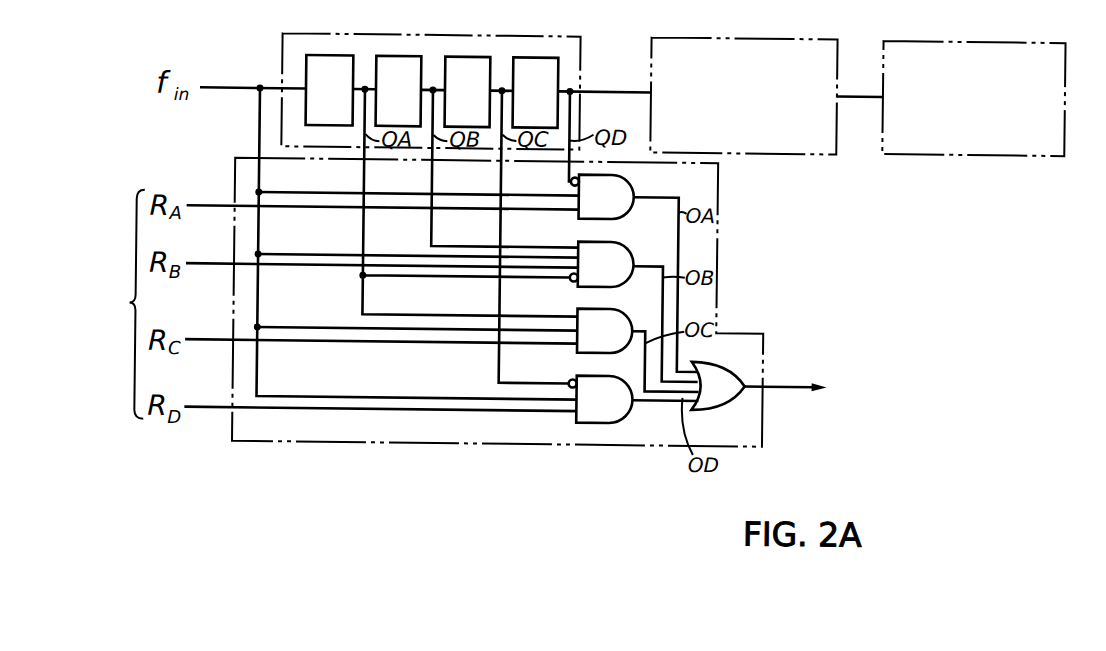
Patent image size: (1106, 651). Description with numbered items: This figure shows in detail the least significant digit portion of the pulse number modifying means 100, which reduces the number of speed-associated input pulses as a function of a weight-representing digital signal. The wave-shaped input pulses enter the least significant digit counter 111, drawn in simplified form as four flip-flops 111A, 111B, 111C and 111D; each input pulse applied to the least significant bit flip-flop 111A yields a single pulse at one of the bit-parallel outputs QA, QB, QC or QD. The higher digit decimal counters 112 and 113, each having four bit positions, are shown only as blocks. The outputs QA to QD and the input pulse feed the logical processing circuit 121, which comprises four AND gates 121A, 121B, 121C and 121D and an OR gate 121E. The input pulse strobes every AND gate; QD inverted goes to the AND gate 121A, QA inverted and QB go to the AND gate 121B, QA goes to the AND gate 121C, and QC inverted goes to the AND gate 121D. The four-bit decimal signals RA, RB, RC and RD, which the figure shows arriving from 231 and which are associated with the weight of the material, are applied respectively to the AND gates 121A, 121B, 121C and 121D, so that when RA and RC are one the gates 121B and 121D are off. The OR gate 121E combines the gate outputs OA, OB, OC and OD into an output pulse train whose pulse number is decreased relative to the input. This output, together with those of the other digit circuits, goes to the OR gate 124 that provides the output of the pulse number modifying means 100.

The pulse number modifying means 100 is at (258, 512).
The least significant digit decimal counter 111 is at (580, 33).
The least significant bit flip-flop 111A is at (323, 43).
The second stage flip-flop 111B is at (393, 43).
The third stage flip-flop 111C is at (461, 42).
The fourth stage flip-flop 111D is at (525, 42).
The digit decimal counter 112 is at (819, 36).
The digit decimal counter 113 is at (1044, 40).
The logical processing circuit 121 is at (466, 430).
The AND gate 121A is at (613, 208).
The AND gate 121B is at (613, 276).
The AND gate 121C is at (610, 342).
The AND gate 121D is at (616, 412).
The OR gate 121E is at (727, 402).
The OR gate 124 is at (839, 392).
The rate select input source 231 is at (104, 304).